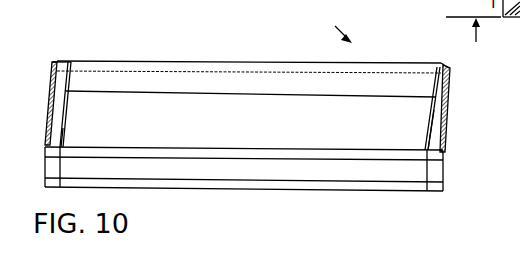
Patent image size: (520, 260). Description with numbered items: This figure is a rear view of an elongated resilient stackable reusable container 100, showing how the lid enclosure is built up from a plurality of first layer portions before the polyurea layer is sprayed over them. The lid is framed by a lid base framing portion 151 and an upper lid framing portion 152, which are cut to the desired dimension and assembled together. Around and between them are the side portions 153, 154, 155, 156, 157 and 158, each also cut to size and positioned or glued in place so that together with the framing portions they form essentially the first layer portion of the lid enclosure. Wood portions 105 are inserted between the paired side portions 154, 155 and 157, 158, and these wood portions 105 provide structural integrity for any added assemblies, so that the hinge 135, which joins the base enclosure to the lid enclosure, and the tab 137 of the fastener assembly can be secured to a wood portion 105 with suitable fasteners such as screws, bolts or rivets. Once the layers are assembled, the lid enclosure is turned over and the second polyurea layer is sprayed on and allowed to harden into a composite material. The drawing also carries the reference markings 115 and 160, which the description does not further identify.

The reusable container 100 is at (389, 234).
The wood portion 105 is at (66, 117).
The lower housing edge 115 is at (446, 172).
The hinge 135 is at (53, 63).
The tab 137 is at (450, 134).
The lid base framing portion 151 is at (295, 190).
The upper lid framing portion 152 is at (303, 150).
The side portion 153 is at (271, 78).
The side portion 154 is at (443, 80).
The side portion 155 is at (436, 133).
The side portion 156 is at (221, 162).
The side portion 157 is at (62, 133).
The side portion 158 is at (70, 62).
The direction arrow 160 is at (352, 25).